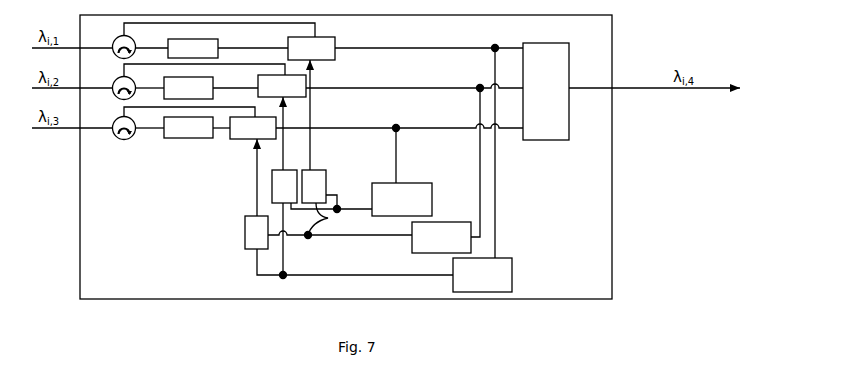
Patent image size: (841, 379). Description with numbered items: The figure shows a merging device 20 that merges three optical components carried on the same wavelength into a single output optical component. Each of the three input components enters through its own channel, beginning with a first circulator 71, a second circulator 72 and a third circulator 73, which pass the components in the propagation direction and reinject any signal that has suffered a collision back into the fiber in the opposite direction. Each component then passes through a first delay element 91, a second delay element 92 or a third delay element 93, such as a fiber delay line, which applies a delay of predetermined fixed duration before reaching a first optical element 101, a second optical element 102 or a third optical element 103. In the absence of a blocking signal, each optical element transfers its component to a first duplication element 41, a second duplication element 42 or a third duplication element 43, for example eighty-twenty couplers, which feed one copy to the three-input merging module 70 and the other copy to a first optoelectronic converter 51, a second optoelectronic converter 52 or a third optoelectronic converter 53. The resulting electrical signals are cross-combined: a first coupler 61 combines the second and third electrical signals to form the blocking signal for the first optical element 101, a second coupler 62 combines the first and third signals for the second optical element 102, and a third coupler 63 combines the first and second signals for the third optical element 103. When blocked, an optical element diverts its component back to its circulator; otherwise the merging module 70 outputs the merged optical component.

The merging device 20 is at (428, 299).
The first circulator 71 is at (116, 56).
The second circulator 72 is at (116, 97).
The third circulator 73 is at (116, 137).
The first delay element 91 is at (190, 38).
The second delay element 92 is at (166, 99).
The third delay element 93 is at (187, 138).
The first optical element 101 is at (330, 60).
The second optical element 102 is at (302, 97).
The third optical element 103 is at (244, 139).
The first duplication element 41 is at (495, 47).
The second duplication element 42 is at (480, 86).
The third duplication element 43 is at (396, 127).
The merging module 70 is at (569, 127).
The first coupler 61 is at (318, 170).
The second coupler 62 is at (288, 170).
The third coupler 63 is at (250, 249).
The first optoelectronic converter 51 is at (512, 272).
The second optoelectronic converter 52 is at (442, 222).
The third optoelectronic converter 53 is at (432, 192).